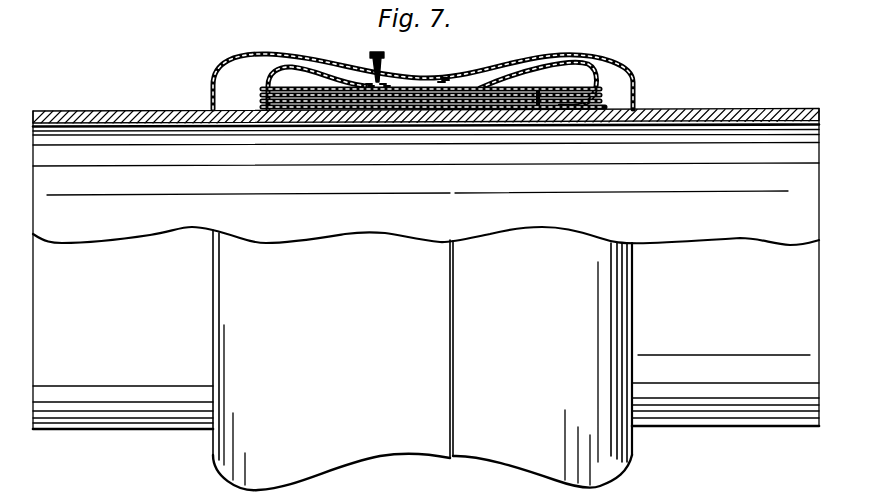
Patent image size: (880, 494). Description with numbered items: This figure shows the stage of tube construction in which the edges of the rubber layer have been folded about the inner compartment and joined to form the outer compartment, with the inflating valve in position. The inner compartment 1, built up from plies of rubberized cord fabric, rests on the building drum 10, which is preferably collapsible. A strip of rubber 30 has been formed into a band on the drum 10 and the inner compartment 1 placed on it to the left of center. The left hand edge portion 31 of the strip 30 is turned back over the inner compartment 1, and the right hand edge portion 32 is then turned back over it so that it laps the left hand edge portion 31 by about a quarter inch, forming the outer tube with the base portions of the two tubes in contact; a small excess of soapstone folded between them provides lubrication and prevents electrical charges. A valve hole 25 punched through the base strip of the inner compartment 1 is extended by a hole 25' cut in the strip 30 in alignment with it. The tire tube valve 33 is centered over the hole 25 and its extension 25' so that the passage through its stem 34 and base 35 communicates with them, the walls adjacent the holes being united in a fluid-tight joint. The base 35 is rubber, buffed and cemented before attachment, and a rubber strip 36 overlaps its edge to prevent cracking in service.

The building drum 10 is at (737, 109).
The strip of rubber 30 is at (608, 64).
The inner compartment 1 is at (596, 89).
The valve hole 25 is at (403, 68).
The hole 25' is at (384, 56).
The left hand edge portion 31 is at (444, 78).
The right hand edge portion 32 is at (445, 80).
The tire tube valve 33 is at (382, 83).
The stem 34 is at (372, 83).
The base 35 is at (373, 83).
The rubber strip 36 is at (445, 81).